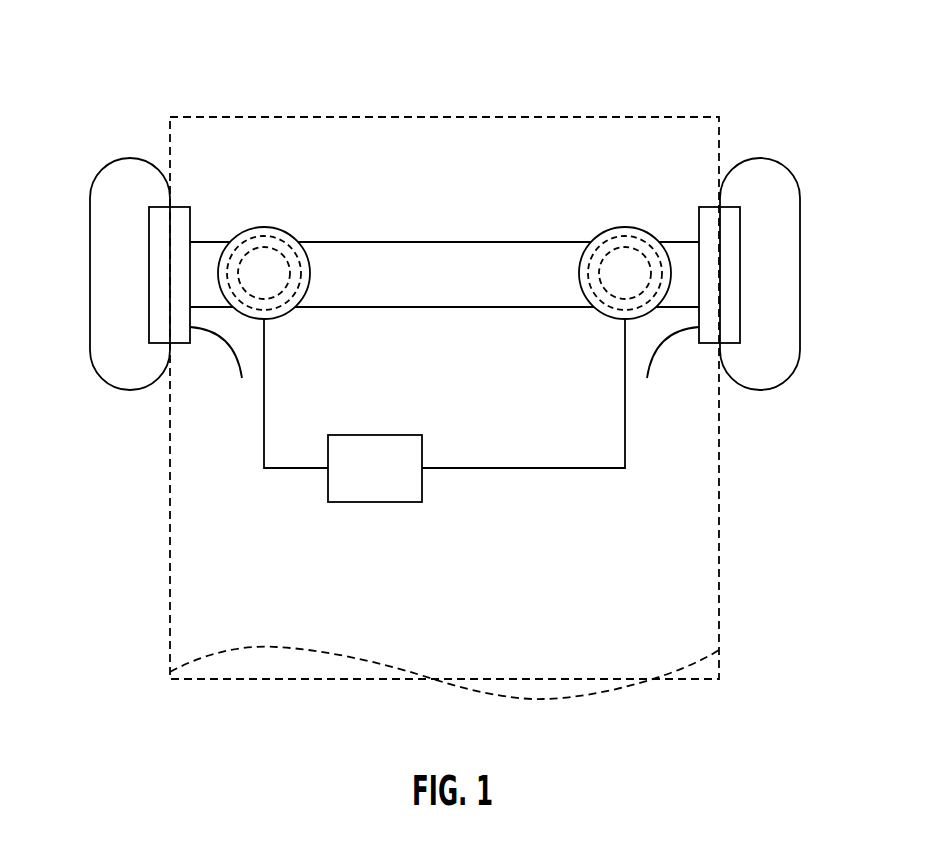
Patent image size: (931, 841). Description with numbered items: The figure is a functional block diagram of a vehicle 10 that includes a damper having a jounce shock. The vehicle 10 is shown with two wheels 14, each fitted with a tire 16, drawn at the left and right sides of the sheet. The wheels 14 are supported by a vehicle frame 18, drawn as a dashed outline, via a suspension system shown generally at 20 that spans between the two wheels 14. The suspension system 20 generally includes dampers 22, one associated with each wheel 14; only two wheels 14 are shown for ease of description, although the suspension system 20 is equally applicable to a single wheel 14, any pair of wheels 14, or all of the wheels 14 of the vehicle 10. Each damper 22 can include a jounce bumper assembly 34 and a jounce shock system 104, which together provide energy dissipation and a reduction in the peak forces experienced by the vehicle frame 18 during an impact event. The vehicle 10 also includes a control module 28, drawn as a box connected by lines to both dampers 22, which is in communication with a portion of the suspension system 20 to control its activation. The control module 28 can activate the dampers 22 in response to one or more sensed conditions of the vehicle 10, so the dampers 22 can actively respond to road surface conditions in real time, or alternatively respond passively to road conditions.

The vehicle 10 is at (622, 40).
The wheel 14 is at (444, 311).
The tire 16 is at (134, 158).
The vehicle frame 18 is at (537, 117).
The suspension system 20 is at (543, 198).
The damper 22 is at (312, 318).
The control module 28 is at (372, 503).
The jounce bumper assembly 34 is at (264, 232).
The jounce shock system 104 is at (266, 302).